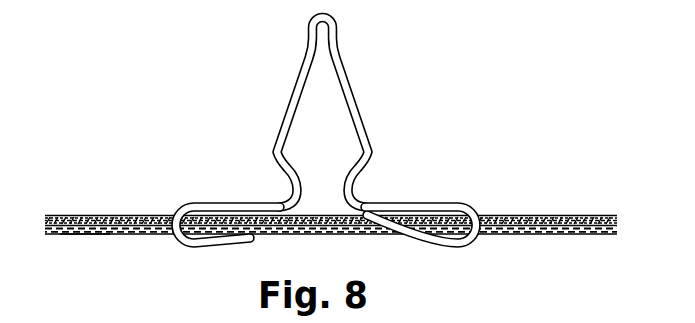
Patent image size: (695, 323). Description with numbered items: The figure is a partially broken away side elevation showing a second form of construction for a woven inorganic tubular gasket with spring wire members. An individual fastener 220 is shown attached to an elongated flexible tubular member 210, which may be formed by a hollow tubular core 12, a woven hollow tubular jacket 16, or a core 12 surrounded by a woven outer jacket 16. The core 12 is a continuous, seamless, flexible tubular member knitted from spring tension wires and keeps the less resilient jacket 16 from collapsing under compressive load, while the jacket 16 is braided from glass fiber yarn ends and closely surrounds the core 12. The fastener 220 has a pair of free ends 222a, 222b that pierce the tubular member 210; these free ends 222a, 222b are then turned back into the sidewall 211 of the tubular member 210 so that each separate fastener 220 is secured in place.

The elongated core 12 is at (556, 204).
The woven outer jacket 16 is at (571, 244).
The tubular member 210 is at (179, 62).
The sidewall 211 is at (83, 236).
The fastener 220 is at (364, 84).
The free end 222a is at (282, 211).
The free end 222b is at (397, 206).